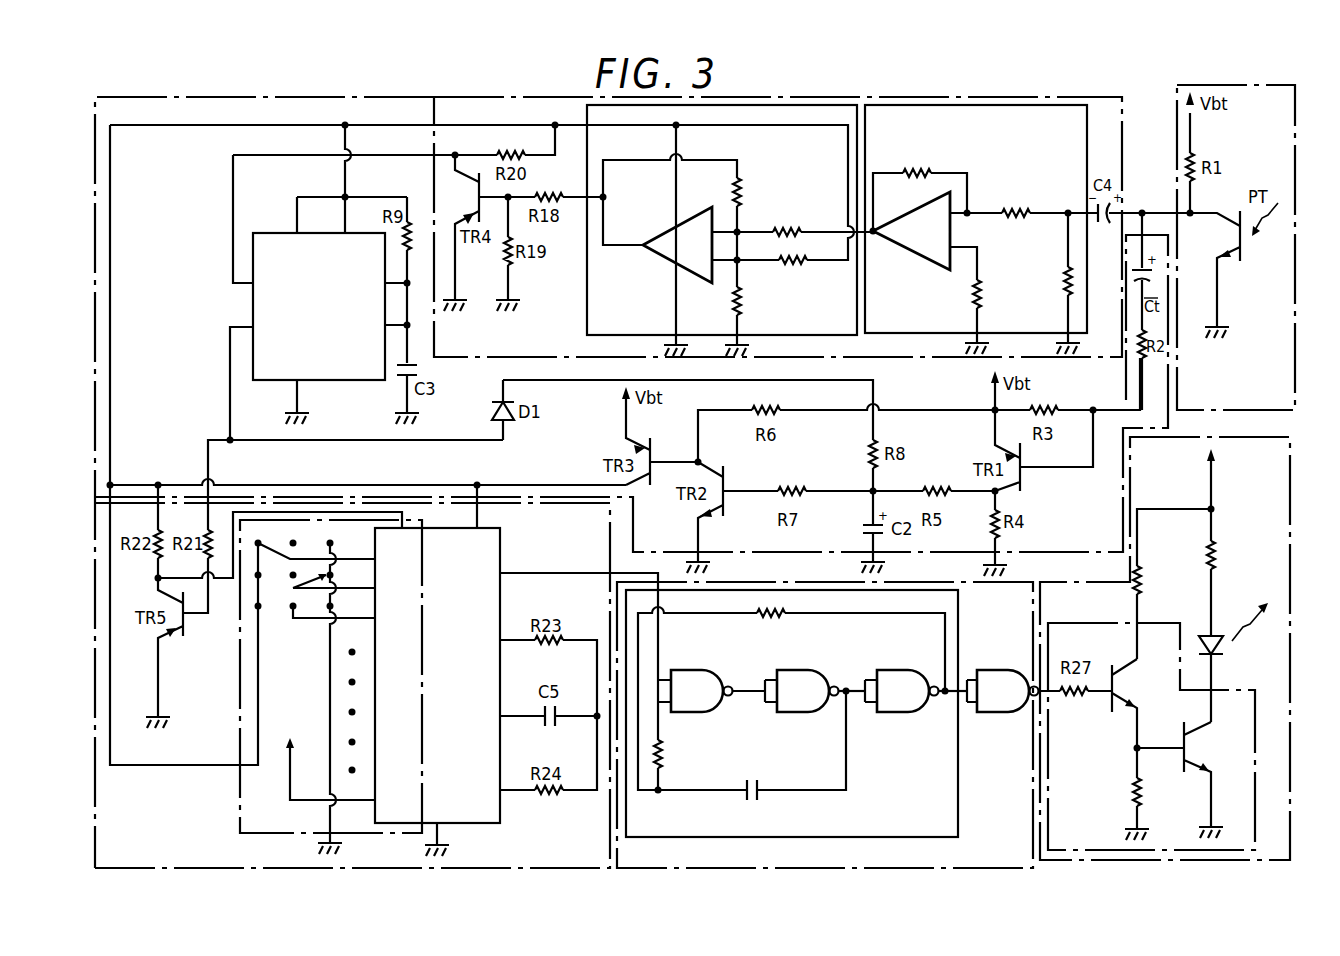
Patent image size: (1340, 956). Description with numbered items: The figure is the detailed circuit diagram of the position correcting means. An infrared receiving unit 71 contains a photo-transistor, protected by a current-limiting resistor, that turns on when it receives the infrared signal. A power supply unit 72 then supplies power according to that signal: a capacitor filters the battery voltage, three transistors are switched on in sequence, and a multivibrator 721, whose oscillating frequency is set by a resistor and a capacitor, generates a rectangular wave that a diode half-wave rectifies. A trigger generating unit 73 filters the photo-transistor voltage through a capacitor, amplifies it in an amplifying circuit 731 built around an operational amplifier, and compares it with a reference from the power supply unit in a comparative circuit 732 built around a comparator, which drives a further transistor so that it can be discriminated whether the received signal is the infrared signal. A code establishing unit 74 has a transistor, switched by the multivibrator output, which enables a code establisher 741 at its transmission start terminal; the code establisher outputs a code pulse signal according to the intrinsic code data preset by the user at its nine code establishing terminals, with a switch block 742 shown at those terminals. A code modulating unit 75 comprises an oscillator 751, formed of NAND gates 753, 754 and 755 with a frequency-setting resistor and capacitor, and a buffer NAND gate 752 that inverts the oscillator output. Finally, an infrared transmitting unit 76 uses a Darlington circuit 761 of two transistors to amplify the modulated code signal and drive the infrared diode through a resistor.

The infrared receiving unit 71 is at (1300, 105).
The power supply unit 72 is at (152, 95).
The multivibrator 721 is at (265, 233).
The trigger generating unit 73 is at (1123, 110).
The amplifying circuit 731 is at (1070, 107).
The comparative circuit 732 is at (585, 315).
The code establishing unit 74 is at (122, 866).
The code establisher 741 is at (505, 537).
The code setting switch 742 is at (237, 793).
The code modulating unit 75 is at (973, 867).
The oscillator 751 is at (733, 705).
The buffer NAND gate 752 is at (1000, 668).
The NAND gate 753 is at (697, 668).
The NAND gate 754 is at (800, 668).
The NAND gate 755 is at (900, 668).
The infrared transmitting unit 76 is at (1100, 581).
The Darlington circuit 761 is at (1072, 850).